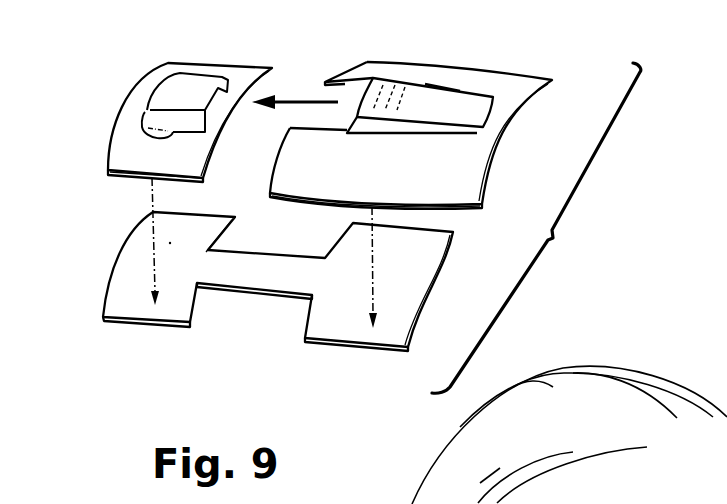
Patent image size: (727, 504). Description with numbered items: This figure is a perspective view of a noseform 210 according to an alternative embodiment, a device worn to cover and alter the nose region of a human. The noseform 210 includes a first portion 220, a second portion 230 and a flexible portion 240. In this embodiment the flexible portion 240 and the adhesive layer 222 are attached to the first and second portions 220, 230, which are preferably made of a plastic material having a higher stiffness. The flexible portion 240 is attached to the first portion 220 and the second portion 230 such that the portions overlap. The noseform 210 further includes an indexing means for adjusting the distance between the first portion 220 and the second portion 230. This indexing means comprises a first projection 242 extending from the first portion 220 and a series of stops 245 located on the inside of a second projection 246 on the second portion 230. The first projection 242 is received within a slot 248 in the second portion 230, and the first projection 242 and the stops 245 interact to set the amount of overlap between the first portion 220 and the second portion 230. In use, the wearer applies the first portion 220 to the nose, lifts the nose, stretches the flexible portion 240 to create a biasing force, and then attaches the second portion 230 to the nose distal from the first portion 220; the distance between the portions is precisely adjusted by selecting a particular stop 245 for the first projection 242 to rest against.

The noseform 210 is at (88, 170).
The first portion 220 is at (198, 68).
The adhesive layer 222 is at (172, 330).
The second portion 230 is at (512, 82).
The flexible portion 240 is at (252, 295).
The first projection 242 is at (162, 90).
The stops 245 is at (380, 76).
The second projection 246 is at (443, 86).
The slot 248 is at (332, 80).